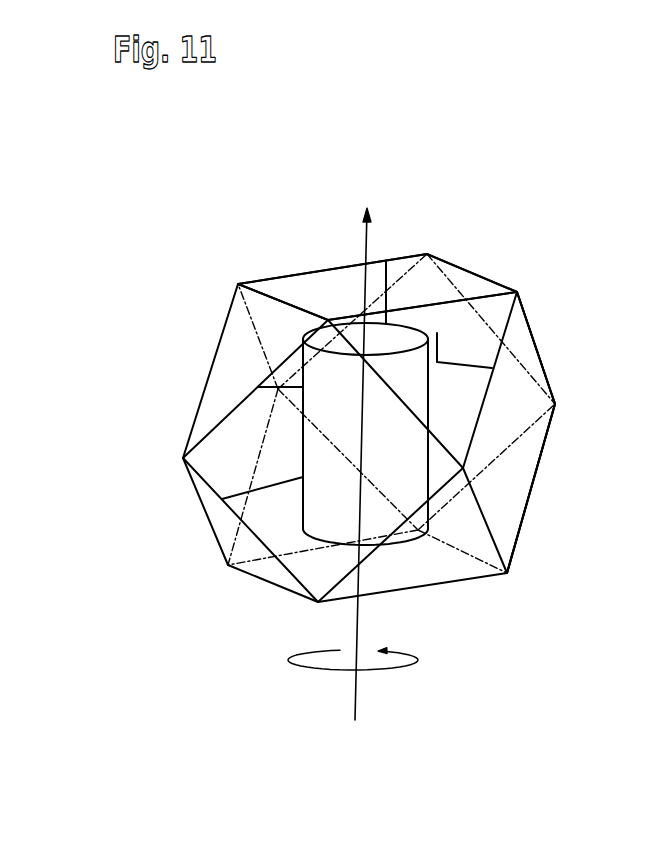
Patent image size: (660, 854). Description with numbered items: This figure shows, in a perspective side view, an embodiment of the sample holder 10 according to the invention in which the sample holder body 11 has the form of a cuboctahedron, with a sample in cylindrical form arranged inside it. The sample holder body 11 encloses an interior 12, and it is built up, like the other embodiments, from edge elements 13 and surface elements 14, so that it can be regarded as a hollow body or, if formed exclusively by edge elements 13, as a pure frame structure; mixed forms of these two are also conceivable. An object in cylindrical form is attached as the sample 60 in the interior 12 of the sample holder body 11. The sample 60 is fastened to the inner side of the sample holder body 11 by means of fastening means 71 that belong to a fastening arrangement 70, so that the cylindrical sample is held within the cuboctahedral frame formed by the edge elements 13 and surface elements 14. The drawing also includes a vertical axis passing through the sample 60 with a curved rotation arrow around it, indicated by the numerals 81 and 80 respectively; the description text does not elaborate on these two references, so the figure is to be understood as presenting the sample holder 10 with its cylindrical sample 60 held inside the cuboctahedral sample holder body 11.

The sample holder 10 is at (398, 212).
The sample holder body 11 is at (537, 343).
The interior 12 is at (302, 297).
The edge elements 13 is at (548, 437).
The surface elements 14 is at (508, 485).
The sample 60 is at (401, 451).
The fastening arrangement 70 is at (275, 472).
The fastening means 71 is at (438, 333).
The rotation direction 80 is at (302, 698).
The rotation axis 81 is at (355, 690).